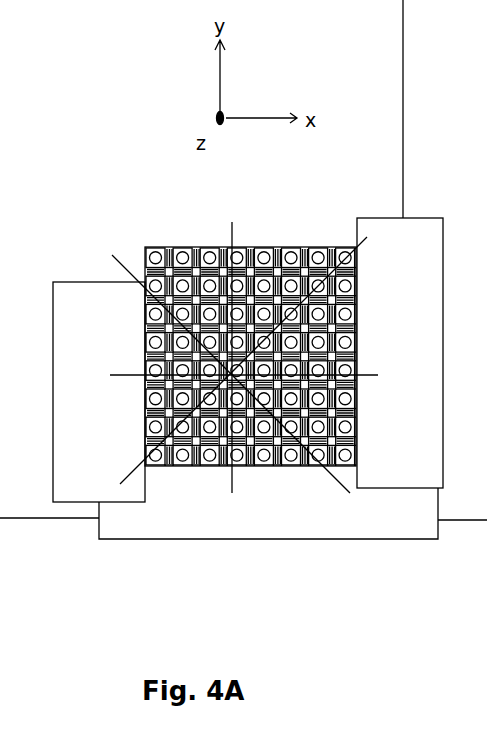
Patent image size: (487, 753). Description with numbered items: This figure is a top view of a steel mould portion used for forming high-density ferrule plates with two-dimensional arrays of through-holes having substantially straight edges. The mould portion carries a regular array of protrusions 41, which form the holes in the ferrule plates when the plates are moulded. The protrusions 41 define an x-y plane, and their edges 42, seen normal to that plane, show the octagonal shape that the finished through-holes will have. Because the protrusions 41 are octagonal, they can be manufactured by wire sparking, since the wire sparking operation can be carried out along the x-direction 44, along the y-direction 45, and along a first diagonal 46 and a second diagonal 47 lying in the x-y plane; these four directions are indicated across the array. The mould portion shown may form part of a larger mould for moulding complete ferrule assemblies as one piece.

The protrusions 41 is at (213, 250).
The edges 42 is at (353, 318).
The x-direction 44 is at (241, 480).
The y-direction 45 is at (372, 365).
The first diagonal 46 is at (352, 477).
The second diagonal 47 is at (134, 482).